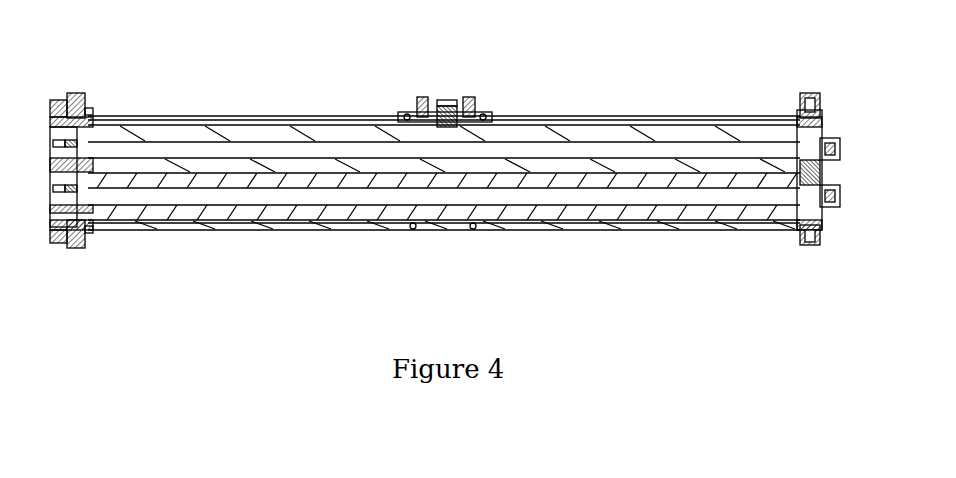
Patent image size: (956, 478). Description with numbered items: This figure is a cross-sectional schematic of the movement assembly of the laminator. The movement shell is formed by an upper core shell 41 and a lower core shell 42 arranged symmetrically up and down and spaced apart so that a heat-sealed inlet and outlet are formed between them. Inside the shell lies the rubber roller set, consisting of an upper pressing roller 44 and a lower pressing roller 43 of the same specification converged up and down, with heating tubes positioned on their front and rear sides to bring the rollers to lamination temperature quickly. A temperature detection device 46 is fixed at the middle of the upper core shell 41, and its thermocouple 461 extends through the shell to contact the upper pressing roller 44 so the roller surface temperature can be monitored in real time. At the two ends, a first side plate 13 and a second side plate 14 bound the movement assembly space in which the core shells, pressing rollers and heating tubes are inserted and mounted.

The first side plate 13 is at (75, 93).
The second side plate 14 is at (812, 93).
The upper core shell 41 is at (168, 116).
The lower core shell 42 is at (160, 232).
The lower pressing roller 43 is at (338, 220).
The upper pressing roller 44 is at (324, 135).
The temperature detection device 46 is at (423, 100).
The thermocouple 461 is at (447, 103).